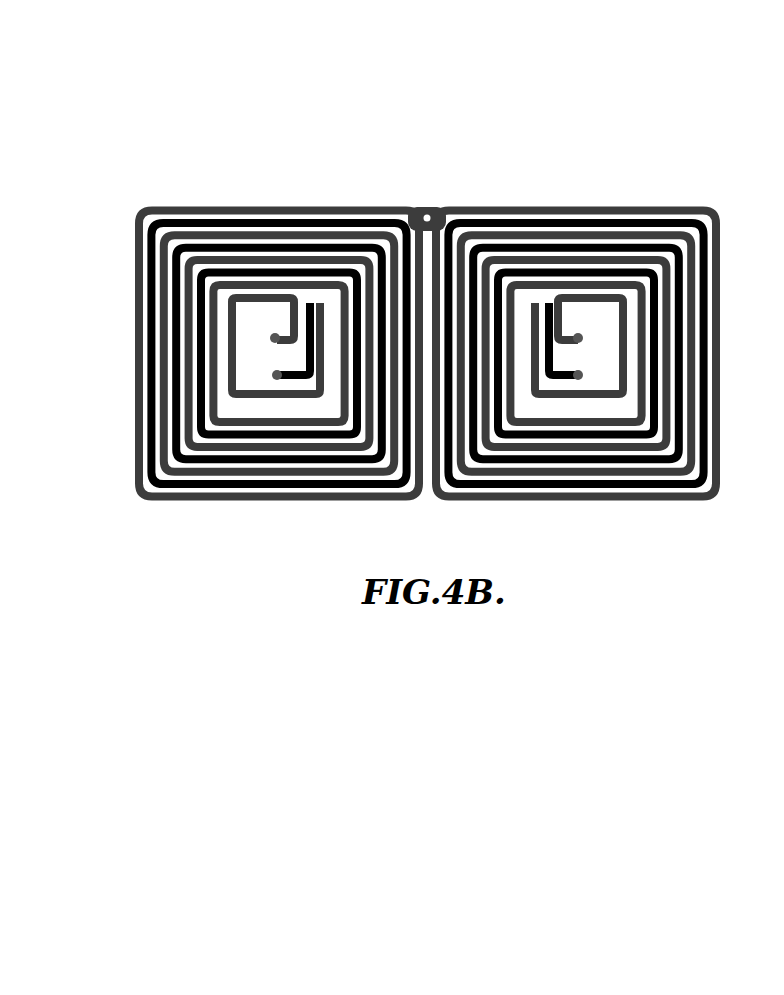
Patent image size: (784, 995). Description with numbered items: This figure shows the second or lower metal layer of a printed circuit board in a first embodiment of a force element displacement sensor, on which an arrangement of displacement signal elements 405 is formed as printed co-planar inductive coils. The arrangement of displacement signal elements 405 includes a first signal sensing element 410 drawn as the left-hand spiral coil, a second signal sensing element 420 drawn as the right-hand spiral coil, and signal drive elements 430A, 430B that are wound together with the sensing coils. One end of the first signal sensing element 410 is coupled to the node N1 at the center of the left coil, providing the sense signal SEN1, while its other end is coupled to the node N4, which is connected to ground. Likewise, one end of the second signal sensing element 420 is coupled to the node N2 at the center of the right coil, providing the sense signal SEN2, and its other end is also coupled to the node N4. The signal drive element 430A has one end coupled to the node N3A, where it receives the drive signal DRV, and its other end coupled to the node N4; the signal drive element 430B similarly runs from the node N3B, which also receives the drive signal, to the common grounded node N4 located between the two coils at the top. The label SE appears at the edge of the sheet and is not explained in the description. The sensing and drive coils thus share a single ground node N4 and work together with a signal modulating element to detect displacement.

The arrangement of displacement signal elements 405 is at (645, 95).
The first signal sensing element 410 is at (150, 206).
The second signal sensing element 420 is at (700, 206).
The signal drive element 430A is at (276, 206).
The signal drive element 430B is at (556, 206).
The node N1 is at (274, 335).
The node N2 is at (584, 325).
The node N3A is at (280, 353).
The node N3B is at (577, 370).
The node N4 is at (428, 206).
The sensing element label SE is at (772, 219).